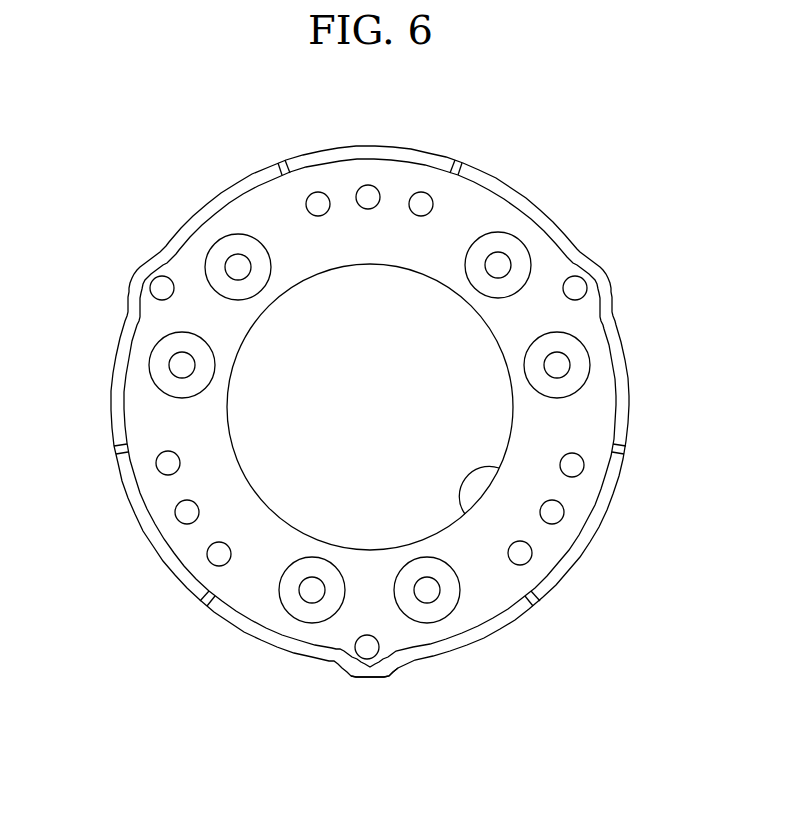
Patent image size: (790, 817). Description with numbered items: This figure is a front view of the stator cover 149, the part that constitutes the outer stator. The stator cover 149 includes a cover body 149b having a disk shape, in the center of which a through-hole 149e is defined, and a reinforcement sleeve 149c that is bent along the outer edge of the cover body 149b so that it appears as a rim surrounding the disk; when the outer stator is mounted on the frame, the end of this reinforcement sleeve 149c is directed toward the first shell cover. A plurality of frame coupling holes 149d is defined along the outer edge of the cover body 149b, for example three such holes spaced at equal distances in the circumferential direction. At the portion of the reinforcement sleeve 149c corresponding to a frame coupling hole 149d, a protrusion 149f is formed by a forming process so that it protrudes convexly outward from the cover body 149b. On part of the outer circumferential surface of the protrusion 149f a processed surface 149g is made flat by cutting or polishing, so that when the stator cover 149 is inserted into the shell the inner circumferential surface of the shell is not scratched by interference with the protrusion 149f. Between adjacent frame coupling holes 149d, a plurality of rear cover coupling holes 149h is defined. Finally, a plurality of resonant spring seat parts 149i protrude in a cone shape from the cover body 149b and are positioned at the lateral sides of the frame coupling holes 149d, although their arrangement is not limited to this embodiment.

The stator cover 149 is at (524, 158).
The cover body 149b is at (593, 418).
The reinforcement sleeve 149c is at (610, 493).
The frame coupling hole 149d is at (578, 287).
The through-hole 149e is at (499, 468).
The protrusion 149f is at (388, 667).
The processed surface 149g is at (362, 680).
The rear cover coupling hole 149h is at (216, 558).
The resonant spring seat part 149i is at (155, 359).